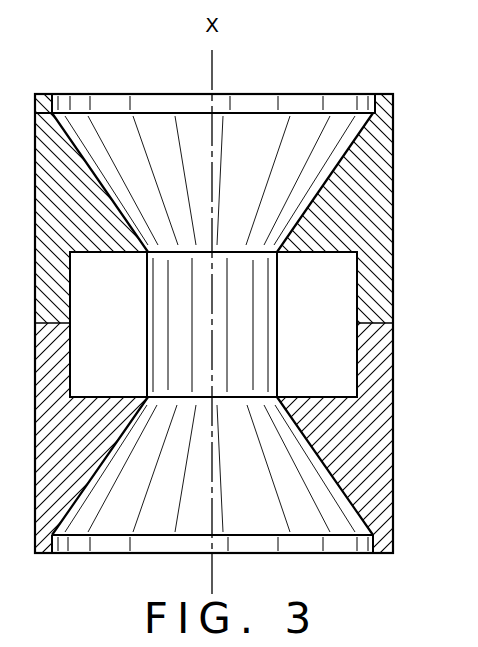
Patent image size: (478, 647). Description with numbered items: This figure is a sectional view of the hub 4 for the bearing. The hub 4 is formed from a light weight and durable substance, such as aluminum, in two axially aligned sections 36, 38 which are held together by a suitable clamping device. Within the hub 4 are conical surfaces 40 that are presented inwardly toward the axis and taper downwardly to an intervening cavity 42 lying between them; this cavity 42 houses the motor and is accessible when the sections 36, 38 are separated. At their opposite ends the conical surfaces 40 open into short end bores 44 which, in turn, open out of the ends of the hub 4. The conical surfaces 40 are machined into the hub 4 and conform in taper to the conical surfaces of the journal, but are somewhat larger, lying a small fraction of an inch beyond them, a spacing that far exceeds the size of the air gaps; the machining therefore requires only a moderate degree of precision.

The hub 4 is at (410, 153).
The section 36 is at (368, 184).
The section 38 is at (365, 433).
The conical surface 40 is at (268, 148).
The cavity 42 is at (337, 280).
The end bore 44 is at (117, 105).